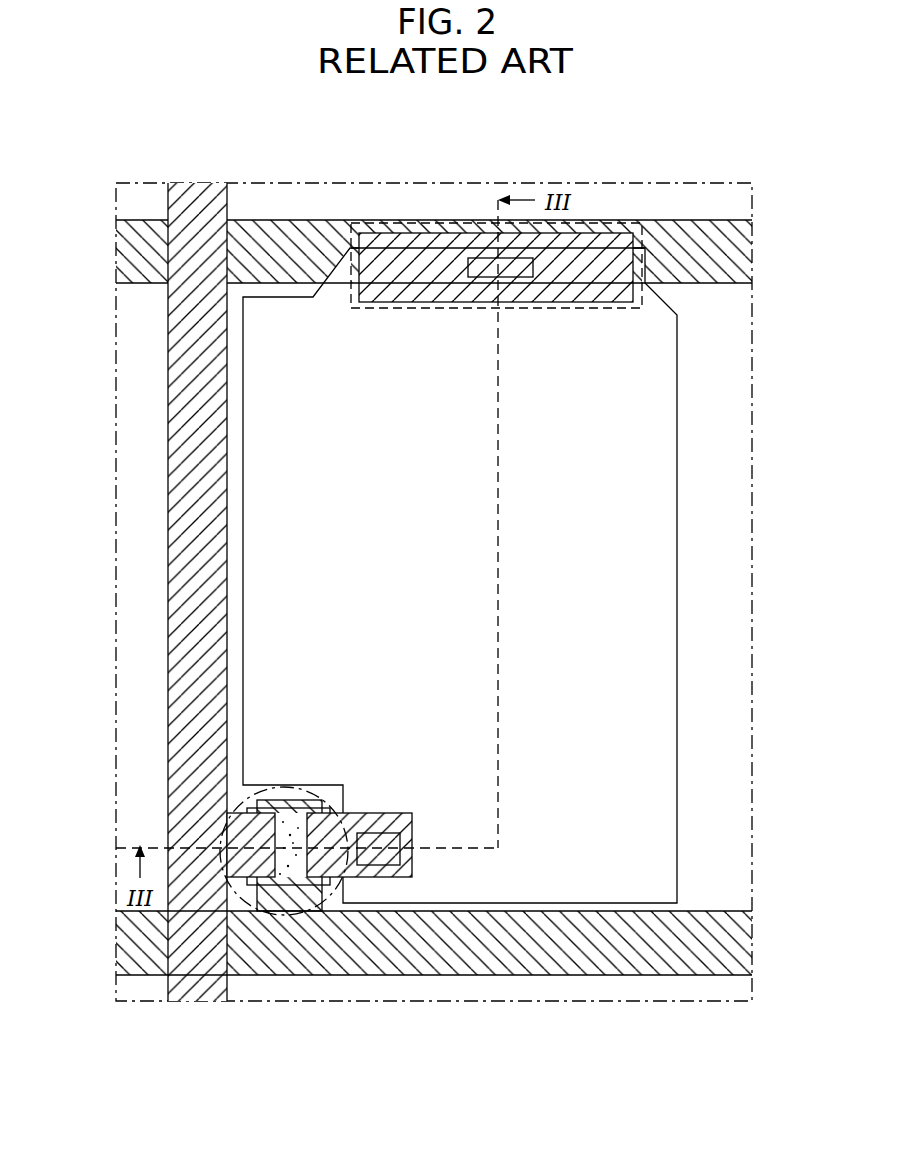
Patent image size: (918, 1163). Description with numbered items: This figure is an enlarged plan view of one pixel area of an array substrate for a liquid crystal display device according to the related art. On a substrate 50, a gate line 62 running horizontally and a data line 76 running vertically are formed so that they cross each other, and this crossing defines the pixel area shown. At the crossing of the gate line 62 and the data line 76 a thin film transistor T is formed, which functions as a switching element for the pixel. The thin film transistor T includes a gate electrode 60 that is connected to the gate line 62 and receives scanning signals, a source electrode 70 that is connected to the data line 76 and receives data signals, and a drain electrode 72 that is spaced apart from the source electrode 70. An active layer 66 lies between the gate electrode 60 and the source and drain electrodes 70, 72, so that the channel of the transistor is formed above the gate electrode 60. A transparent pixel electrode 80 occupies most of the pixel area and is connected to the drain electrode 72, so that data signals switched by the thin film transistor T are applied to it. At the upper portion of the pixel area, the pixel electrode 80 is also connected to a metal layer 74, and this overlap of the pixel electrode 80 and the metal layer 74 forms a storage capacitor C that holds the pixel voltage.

The substrate 50 is at (752, 622).
The gate electrode 60 is at (291, 800).
The gate line 62 is at (575, 975).
The active layer 66 is at (298, 885).
The source electrode 70 is at (265, 877).
The drain electrode 72 is at (396, 877).
The metal layer 74 is at (551, 308).
The data line 76 is at (168, 558).
The pixel electrode 80 is at (677, 696).
The storage capacitor C is at (428, 308).
The thin film transistor T is at (334, 797).